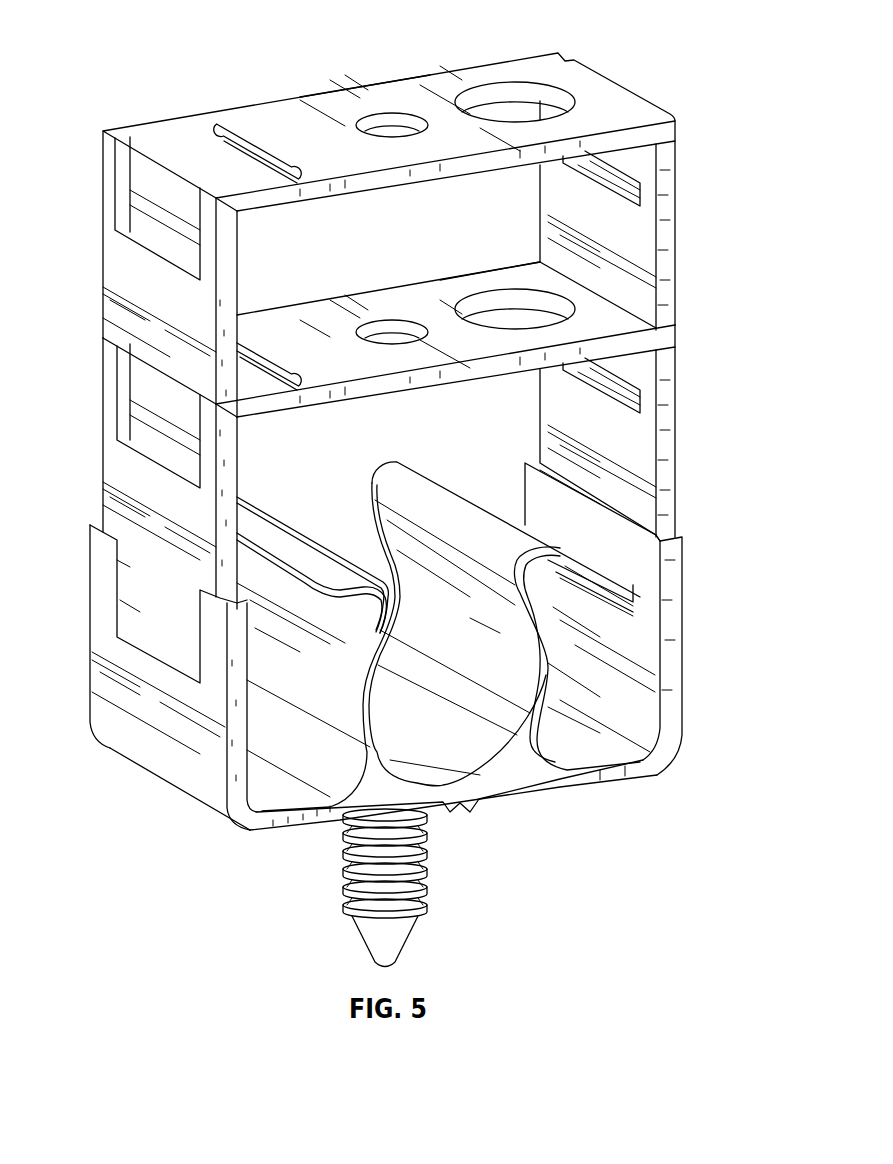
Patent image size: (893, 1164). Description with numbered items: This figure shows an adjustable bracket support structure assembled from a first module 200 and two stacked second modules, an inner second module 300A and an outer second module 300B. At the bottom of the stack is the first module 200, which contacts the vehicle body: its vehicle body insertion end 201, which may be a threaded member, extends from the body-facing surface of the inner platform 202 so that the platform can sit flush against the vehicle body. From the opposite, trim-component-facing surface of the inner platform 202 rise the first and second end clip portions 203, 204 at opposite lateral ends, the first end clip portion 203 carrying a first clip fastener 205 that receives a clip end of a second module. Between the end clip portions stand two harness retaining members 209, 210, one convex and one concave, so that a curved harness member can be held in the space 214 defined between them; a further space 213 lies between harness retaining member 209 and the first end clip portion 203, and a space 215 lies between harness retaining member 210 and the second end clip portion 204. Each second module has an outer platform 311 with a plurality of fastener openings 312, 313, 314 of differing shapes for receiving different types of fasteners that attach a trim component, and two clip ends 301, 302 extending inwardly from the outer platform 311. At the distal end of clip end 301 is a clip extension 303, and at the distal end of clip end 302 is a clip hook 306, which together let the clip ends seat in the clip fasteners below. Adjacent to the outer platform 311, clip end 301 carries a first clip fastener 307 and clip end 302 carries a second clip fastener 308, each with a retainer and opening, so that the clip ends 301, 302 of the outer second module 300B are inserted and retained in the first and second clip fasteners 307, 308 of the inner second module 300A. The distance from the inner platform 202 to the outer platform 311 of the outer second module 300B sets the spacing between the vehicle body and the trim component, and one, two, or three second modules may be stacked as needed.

The first module 200 is at (692, 616).
The vehicle body insertion end 201 is at (430, 855).
The inner platform 202 is at (560, 795).
The first end clip portion 203 is at (150, 742).
The second end clip portion 204 is at (682, 702).
The first clip fastener 205 is at (118, 618).
The harness retaining member 209 is at (307, 687).
The harness retaining member 210 is at (393, 572).
The space 213 is at (326, 753).
The space 214 is at (449, 721).
The space 215 is at (632, 676).
The inner second module 300A is at (704, 421).
The outer second module 300B is at (686, 253).
The clip end 301 is at (103, 234).
The clip end 302 is at (675, 208).
The clip extension 303 is at (130, 410).
The clip hook 306 is at (567, 377).
The first clip fastener 307 is at (146, 164).
The second clip fastener 308 is at (606, 87).
The outer platform 311 is at (432, 72).
The fastener opening 312 is at (237, 136).
The fastener opening 313 is at (392, 130).
The fastener opening 314 is at (518, 96).